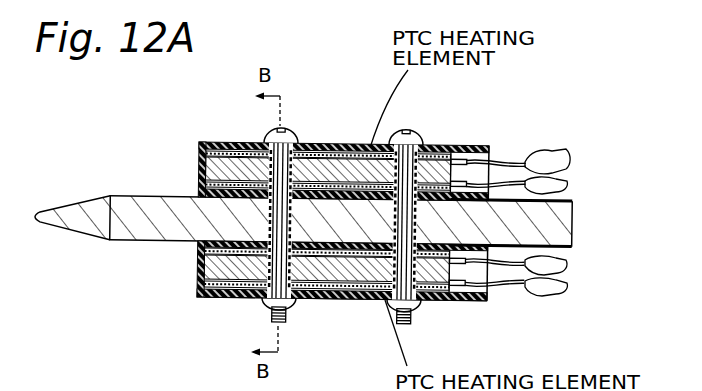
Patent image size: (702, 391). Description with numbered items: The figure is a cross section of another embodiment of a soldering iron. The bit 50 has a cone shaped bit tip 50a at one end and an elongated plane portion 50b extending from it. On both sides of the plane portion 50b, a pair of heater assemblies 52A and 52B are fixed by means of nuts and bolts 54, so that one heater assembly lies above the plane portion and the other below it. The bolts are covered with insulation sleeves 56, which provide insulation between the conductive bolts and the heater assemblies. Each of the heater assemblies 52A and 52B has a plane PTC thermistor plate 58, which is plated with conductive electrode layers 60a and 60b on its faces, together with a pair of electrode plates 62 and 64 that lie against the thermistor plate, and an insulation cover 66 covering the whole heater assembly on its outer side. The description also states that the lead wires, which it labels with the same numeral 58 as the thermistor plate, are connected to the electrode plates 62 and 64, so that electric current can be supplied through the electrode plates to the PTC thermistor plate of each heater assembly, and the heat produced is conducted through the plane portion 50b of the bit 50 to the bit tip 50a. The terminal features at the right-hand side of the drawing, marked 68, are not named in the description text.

The bit 50 is at (561, 250).
The cone shaped bit tip 50a is at (66, 215).
The elongated plane portion 50b is at (317, 298).
The heater assembly 52A is at (338, 140).
The heater assembly 52B is at (345, 303).
The nuts and bolts 54 is at (285, 140).
The insulation sleeve 56 is at (255, 300).
The plane PTC thermistor plate 58 is at (203, 165).
The conductive electrode layer 60a is at (230, 160).
The conductive electrode layer 60b is at (198, 185).
The electrode plate 62 is at (468, 144).
The electrode plate 64 is at (562, 202).
The insulation cover 66 is at (490, 149).
The connector terminal 68 is at (512, 320).